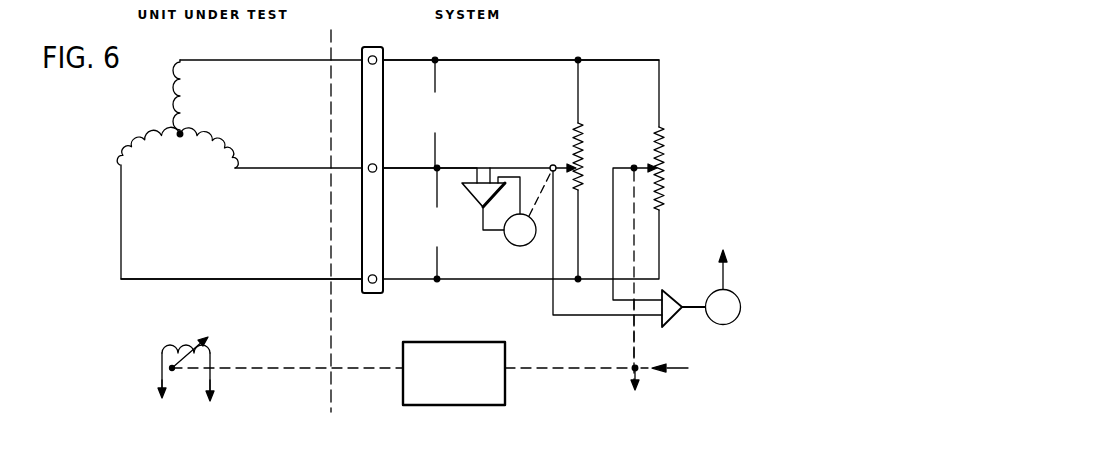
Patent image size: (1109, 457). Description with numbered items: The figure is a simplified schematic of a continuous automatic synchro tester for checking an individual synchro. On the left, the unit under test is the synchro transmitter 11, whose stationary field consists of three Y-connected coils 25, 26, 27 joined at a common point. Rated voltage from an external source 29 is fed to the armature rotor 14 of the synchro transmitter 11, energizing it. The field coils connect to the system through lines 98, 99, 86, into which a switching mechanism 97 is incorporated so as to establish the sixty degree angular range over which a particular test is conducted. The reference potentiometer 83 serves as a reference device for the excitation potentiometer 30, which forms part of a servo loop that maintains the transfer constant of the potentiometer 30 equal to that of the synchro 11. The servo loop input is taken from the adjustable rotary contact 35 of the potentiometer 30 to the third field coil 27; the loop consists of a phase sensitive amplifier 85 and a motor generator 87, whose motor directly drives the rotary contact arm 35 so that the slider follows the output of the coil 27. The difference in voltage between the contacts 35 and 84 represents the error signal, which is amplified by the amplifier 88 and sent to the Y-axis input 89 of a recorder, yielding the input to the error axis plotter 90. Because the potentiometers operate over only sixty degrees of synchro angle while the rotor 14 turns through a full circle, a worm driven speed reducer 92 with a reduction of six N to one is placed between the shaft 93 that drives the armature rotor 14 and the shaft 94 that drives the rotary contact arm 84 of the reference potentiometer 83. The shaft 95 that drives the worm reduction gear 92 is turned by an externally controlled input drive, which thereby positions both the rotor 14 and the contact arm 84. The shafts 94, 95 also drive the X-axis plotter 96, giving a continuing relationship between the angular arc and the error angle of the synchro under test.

The synchro transmitter 11 is at (183, 133).
The field coil 25 is at (182, 100).
The field coil 26 is at (141, 139).
The third field coil 27 is at (236, 162).
The armature rotor 14 is at (210, 345).
The external source 29 is at (178, 401).
The switching mechanism 97 is at (383, 95).
The line 98 is at (486, 62).
The line 99 is at (228, 279).
The line 86 is at (447, 168).
The phase sensitive amplifier 85 is at (476, 196).
The motor generator 87 is at (509, 243).
The excitation potentiometer 30 is at (575, 128).
The adjustable rotary contact 35 is at (553, 165).
The rotary contact arm 84 is at (634, 165).
The reference potentiometer 83 is at (664, 145).
The amplifier 88 is at (670, 321).
The Y-axis input 89 is at (741, 308).
The error axis plotter 90 is at (732, 259).
The worm driven speed reducer 92 is at (432, 342).
The shaft 93 is at (373, 368).
The shaft 95 is at (526, 368).
The shaft 94 is at (633, 340).
The X-axis plotter 96 is at (630, 373).